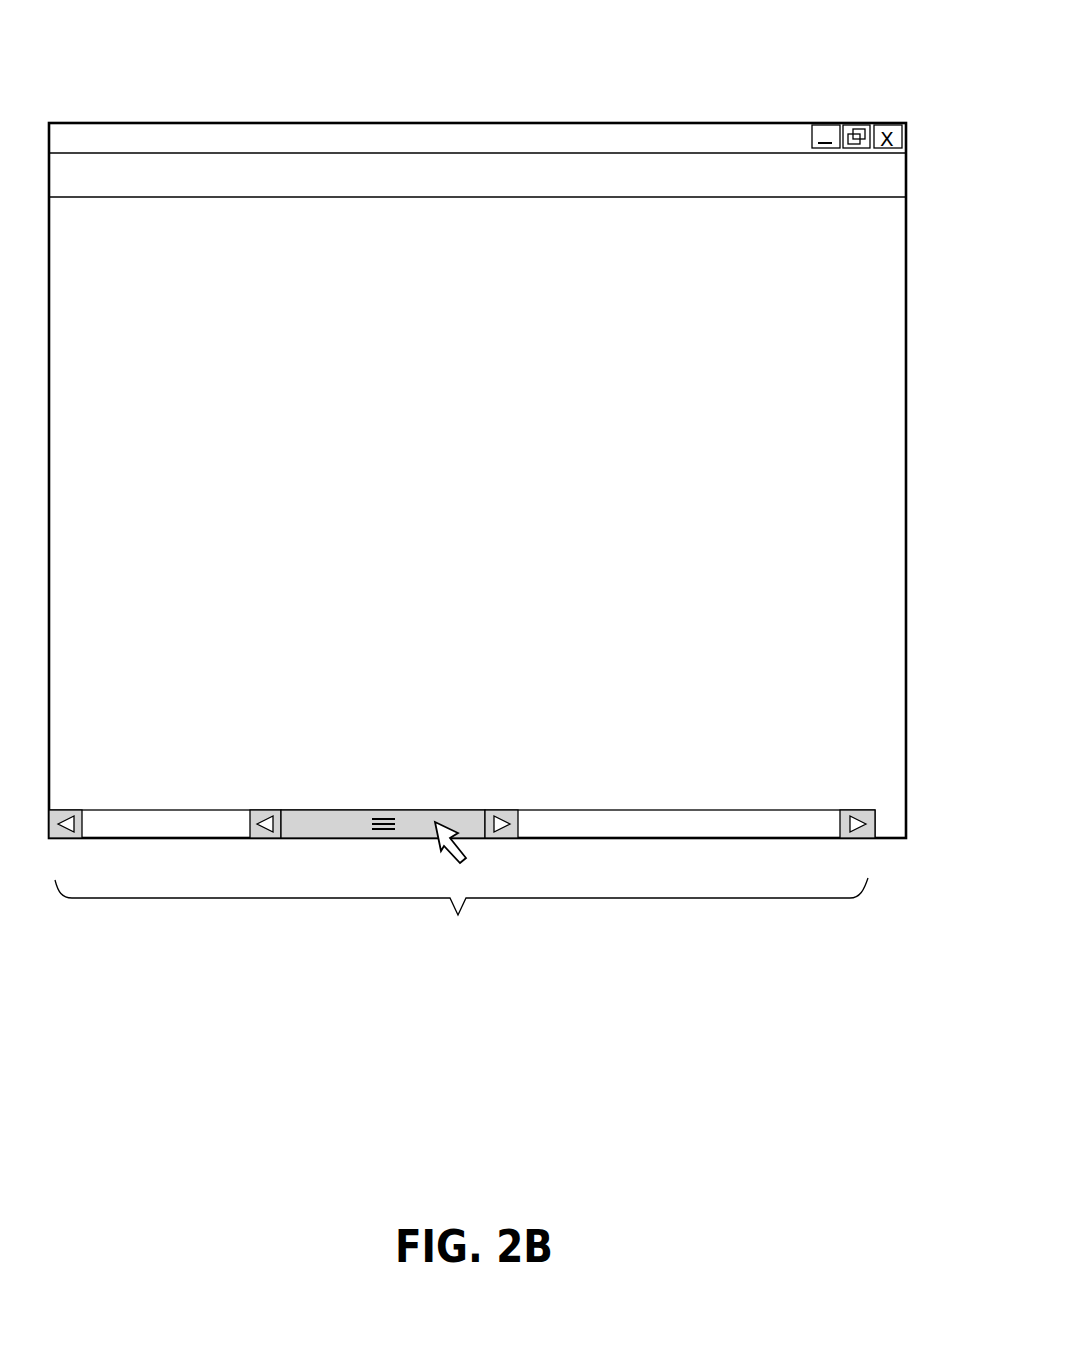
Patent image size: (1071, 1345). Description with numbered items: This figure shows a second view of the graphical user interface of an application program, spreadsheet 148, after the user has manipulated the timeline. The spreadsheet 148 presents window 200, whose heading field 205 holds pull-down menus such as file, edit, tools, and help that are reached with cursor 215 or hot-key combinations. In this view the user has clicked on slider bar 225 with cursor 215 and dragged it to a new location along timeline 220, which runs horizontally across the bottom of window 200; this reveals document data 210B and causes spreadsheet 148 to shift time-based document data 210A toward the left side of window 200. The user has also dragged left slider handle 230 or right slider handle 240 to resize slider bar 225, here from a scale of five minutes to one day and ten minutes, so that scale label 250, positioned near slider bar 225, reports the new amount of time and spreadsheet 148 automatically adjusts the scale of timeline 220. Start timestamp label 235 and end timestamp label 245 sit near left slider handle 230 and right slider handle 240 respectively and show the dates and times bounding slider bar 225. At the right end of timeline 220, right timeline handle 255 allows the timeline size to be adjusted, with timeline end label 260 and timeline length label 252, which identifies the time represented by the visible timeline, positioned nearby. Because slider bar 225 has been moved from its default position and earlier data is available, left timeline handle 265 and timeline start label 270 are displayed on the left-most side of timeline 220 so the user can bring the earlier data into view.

The spreadsheet 148 is at (503, 83).
The window 200 is at (165, 121).
The heading field 205 is at (333, 178).
The time-based document data 210A is at (158, 394).
The document data 210B is at (582, 587).
The cursor 215 is at (468, 857).
The timeline 220 is at (462, 881).
The slider bar 225 is at (376, 807).
The left slider handle 230 is at (262, 844).
The start timestamp label 235 is at (285, 747).
The right slider handle 240 is at (519, 809).
The end timestamp label 245 is at (485, 747).
The scale label 250 is at (352, 886).
The timeline length label 252 is at (787, 864).
The right timeline handle 255 is at (866, 844).
The timeline end label 260 is at (837, 747).
The left timeline handle 265 is at (66, 844).
The timeline start label 270 is at (98, 747).